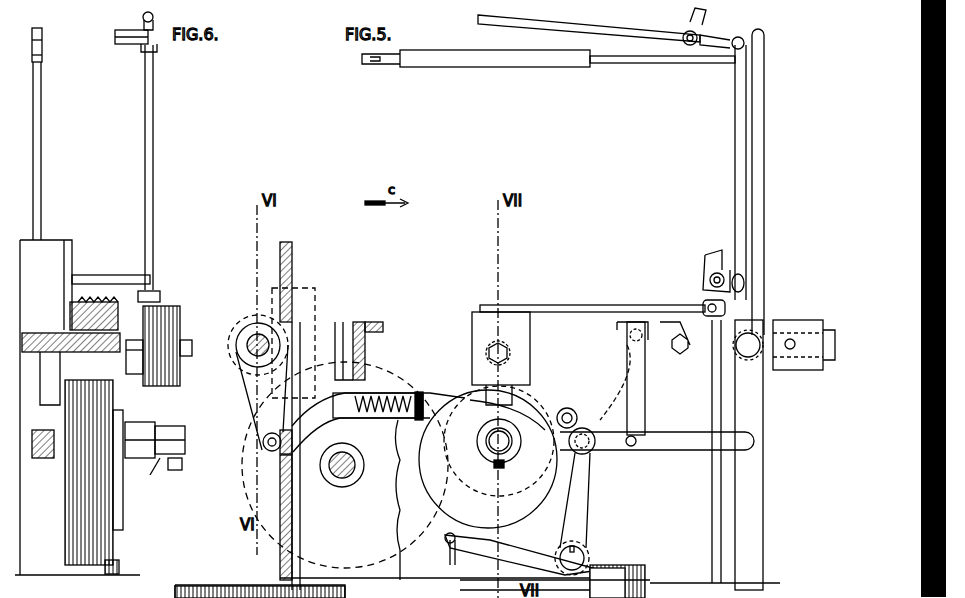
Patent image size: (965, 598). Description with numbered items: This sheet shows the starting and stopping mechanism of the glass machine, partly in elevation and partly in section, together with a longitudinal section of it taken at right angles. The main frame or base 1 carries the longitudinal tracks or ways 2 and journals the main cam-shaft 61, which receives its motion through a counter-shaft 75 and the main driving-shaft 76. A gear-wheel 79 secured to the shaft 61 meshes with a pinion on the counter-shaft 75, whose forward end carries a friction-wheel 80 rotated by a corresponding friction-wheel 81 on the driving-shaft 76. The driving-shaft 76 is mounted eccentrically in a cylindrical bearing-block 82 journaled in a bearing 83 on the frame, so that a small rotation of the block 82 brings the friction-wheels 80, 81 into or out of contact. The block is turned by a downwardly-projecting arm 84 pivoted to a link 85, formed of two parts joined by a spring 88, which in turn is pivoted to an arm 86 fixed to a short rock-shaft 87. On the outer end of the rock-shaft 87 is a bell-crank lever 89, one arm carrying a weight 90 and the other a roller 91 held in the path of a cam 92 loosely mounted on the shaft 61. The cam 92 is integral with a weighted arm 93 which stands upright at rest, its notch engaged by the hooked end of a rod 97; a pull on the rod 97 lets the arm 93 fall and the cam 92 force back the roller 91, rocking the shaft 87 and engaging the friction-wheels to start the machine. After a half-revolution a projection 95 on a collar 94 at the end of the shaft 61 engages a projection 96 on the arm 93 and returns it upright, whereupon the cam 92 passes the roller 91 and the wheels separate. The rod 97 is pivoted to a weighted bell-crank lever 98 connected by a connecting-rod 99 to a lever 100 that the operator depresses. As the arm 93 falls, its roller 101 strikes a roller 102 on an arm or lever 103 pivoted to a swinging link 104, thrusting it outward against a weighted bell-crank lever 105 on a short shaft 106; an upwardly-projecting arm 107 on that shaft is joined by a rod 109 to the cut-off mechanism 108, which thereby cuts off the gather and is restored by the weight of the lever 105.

In FIG. 6, the main frame or base 1 is at (77, 559).
In FIG. 5, the main frame or base 1 is at (530, 451).
In FIG. 5, the longitudinal tracks or ways 2 is at (366, 330).
In FIG. 5, the main cam-shaft 61 is at (499, 441).
In FIG. 5, the counter-shaft 75 is at (338, 478).
In FIG. 6, the main driving-shaft 76 is at (88, 348).
In FIG. 5, the main driving-shaft 76 is at (250, 345).
In FIG. 5, the gear-wheel 79 is at (283, 590).
In FIG. 6, the friction-wheel 80 is at (110, 552).
In FIG. 6, the friction-wheel 81 is at (98, 307).
In FIG. 6, the cylindrical bearing-block 82 is at (48, 332).
In FIG. 5, the cylindrical bearing-block 82 is at (258, 340).
In FIG. 6, the bearing 83 is at (60, 315).
In FIG. 5, the bearing 83 is at (240, 350).
In FIG. 6, the downwardly-projecting arm 84 is at (42, 458).
In FIG. 5, the downwardly-projecting arm 84 is at (258, 388).
In FIG. 5, the link 85 is at (425, 395).
In FIG. 5, the arm 86 is at (586, 518).
In FIG. 5, the rock-shaft 87 is at (584, 556).
In FIG. 5, the spring 88 is at (380, 395).
In FIG. 5, the bell-crank lever 89 is at (522, 552).
In FIG. 5, the weight 90 is at (547, 569).
In FIG. 5, the roller 91 is at (582, 405).
In FIG. 6, the cam 92 is at (120, 516).
In FIG. 5, the cam 92 is at (488, 459).
In FIG. 6, the weighted arm 93 is at (180, 375).
In FIG. 6, the collar 94 is at (182, 464).
In FIG. 5, the collar 94 is at (486, 458).
In FIG. 6, the projection 95 is at (157, 477).
In FIG. 5, the projection 95 is at (478, 446).
In FIG. 6, the projection 96 is at (158, 430).
In FIG. 5, the projection 96 is at (478, 428).
In FIG. 6, the rod 97 is at (160, 297).
In FIG. 5, the rod 97 is at (612, 299).
In FIG. 6, the weighted bell-crank lever 98 is at (150, 280).
In FIG. 5, the weighted bell-crank lever 98 is at (705, 283).
In FIG. 6, the connecting-rod 99 is at (153, 165).
In FIG. 5, the connecting-rod 99 is at (735, 170).
In FIG. 6, the lever 100 is at (143, 17).
In FIG. 5, the lever 100 is at (645, 24).
In FIG. 6, the roller 101 is at (134, 374).
In FIG. 5, the roller 101 is at (512, 355).
In FIG. 5, the roller 102 is at (592, 450).
In FIG. 5, the arm or lever 103 is at (657, 442).
In FIG. 5, the swinging link 104 is at (655, 398).
In FIG. 5, the weighted bell-crank lever 105 is at (755, 408).
In FIG. 5, the short shaft 106 is at (760, 340).
In FIG. 6, the upwardly-projecting arm 107 is at (41, 173).
In FIG. 5, the upwardly-projecting arm 107 is at (764, 172).
In FIG. 5, the cut-off mechanism 108 is at (490, 62).
In FIG. 5, the rod 109 is at (646, 64).